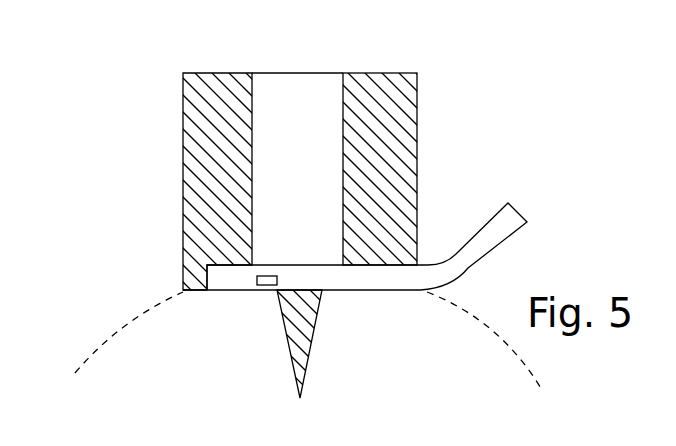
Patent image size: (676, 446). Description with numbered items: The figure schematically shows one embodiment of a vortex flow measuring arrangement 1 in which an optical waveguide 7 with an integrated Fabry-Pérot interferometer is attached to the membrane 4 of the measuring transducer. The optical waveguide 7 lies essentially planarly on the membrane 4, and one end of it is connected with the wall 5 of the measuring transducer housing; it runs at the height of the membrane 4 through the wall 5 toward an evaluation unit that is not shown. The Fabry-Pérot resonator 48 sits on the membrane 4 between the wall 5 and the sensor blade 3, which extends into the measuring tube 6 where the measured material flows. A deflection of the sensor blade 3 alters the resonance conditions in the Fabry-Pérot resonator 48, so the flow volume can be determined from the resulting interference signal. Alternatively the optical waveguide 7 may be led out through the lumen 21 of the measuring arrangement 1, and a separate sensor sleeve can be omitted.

The measuring arrangement 1 is at (478, 91).
The sensor blade 3 is at (310, 350).
The membrane 4 is at (263, 291).
The wall 5 is at (200, 110).
The measuring tube 6 is at (104, 333).
The optical waveguide 7 is at (493, 238).
The lumen 21 is at (315, 170).
The Fabry-Pérot resonator 48 is at (257, 280).